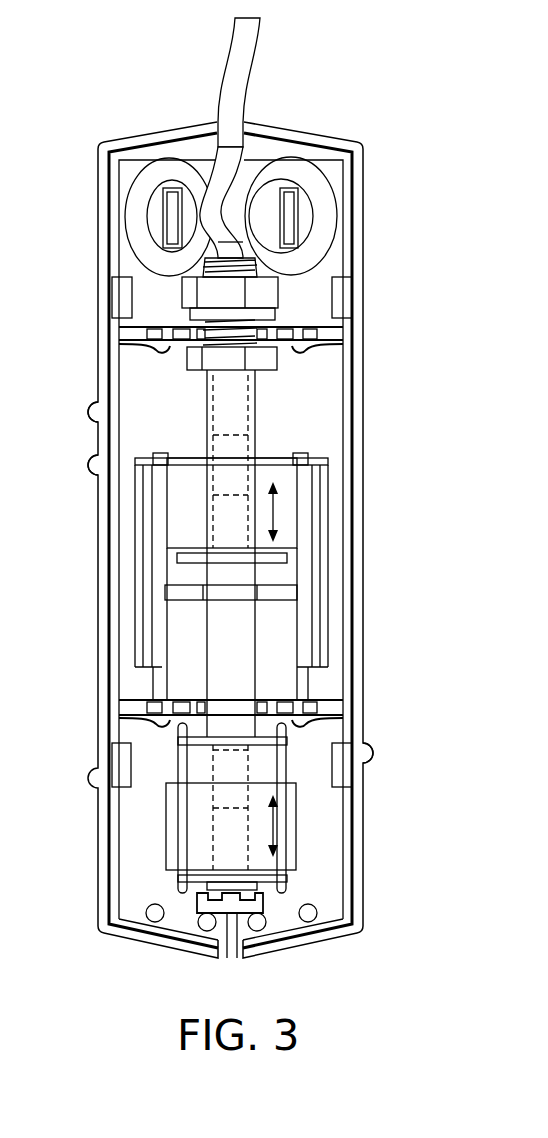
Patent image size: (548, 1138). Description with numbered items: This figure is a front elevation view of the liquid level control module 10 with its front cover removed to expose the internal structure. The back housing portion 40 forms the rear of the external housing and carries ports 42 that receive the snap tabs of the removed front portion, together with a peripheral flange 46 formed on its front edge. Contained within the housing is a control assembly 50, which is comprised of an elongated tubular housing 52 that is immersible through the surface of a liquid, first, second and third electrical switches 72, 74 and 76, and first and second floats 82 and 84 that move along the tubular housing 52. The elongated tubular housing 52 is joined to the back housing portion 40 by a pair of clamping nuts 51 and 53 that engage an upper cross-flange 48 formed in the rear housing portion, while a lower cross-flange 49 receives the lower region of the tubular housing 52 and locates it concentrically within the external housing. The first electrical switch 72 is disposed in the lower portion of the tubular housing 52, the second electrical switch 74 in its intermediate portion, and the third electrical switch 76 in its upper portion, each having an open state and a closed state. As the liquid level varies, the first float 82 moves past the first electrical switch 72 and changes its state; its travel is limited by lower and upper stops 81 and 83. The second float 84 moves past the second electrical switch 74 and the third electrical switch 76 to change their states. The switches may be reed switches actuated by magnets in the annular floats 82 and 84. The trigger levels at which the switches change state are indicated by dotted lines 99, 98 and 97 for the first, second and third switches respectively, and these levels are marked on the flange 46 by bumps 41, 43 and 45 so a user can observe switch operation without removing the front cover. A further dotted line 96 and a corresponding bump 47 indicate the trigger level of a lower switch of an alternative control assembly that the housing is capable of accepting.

The liquid level control module 10 is at (340, 82).
The back housing portion 40 is at (325, 387).
The bump 41 is at (92, 772).
The ports 42 is at (350, 298).
The bump 43 is at (92, 460).
The bump 45 is at (88, 410).
The peripheral flange 46 is at (364, 175).
The bump 47 is at (370, 763).
The upper cross-flange 48 is at (388, 345).
The lower cross-flange 49 is at (378, 708).
The control assembly 50 is at (198, 387).
The clamping nut 51 is at (182, 293).
The elongated tubular housing 52 is at (255, 630).
The clamping nut 53 is at (188, 358).
The first electrical switch 72 is at (227, 793).
The second electrical switch 74 is at (237, 471).
The third electrical switch 76 is at (240, 419).
The lower stop 81 is at (280, 879).
The first float 82 is at (231, 826).
The upper stop 83 is at (282, 740).
The second float 84 is at (231, 576).
The trigger level 96 is at (363, 753).
The trigger level 97 is at (255, 412).
The trigger level 98 is at (272, 465).
The trigger level 99 is at (297, 778).